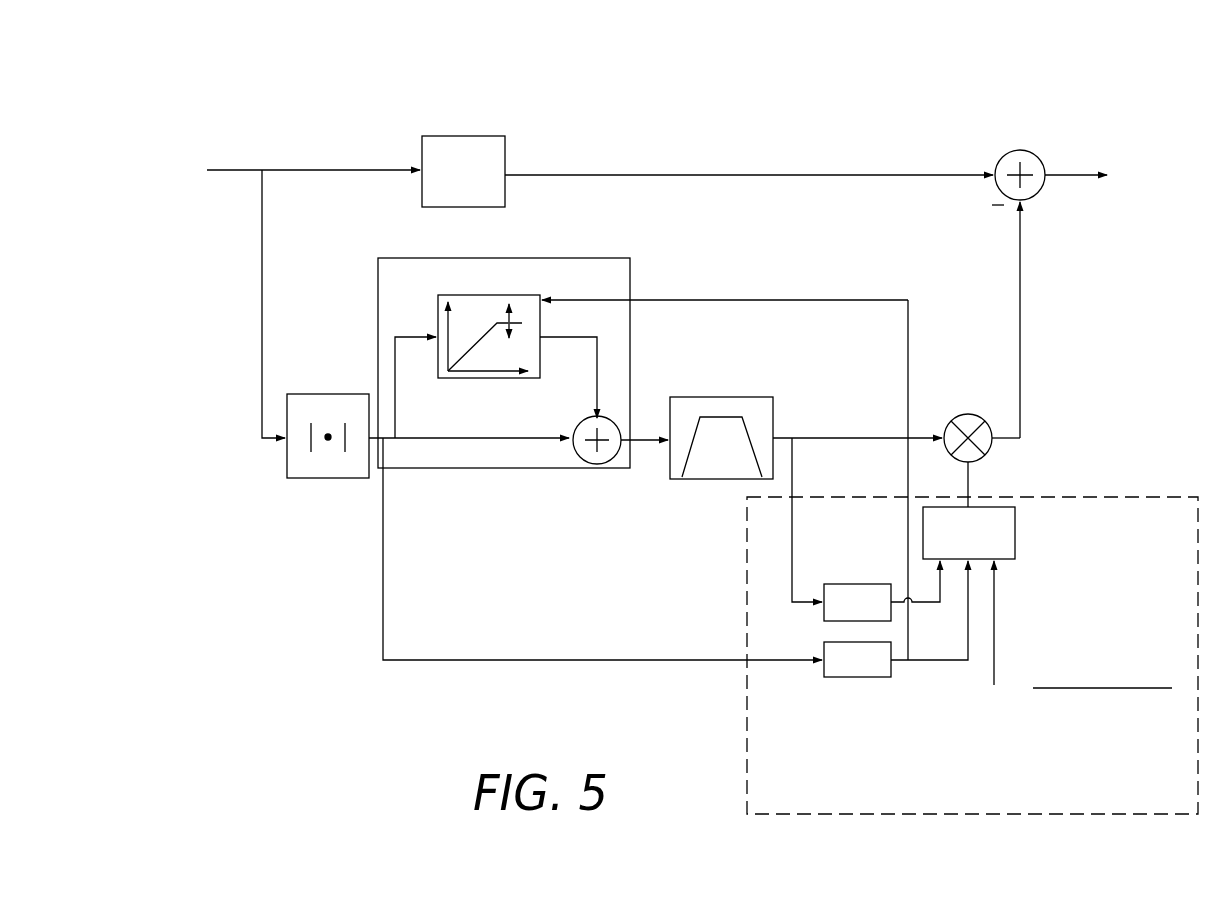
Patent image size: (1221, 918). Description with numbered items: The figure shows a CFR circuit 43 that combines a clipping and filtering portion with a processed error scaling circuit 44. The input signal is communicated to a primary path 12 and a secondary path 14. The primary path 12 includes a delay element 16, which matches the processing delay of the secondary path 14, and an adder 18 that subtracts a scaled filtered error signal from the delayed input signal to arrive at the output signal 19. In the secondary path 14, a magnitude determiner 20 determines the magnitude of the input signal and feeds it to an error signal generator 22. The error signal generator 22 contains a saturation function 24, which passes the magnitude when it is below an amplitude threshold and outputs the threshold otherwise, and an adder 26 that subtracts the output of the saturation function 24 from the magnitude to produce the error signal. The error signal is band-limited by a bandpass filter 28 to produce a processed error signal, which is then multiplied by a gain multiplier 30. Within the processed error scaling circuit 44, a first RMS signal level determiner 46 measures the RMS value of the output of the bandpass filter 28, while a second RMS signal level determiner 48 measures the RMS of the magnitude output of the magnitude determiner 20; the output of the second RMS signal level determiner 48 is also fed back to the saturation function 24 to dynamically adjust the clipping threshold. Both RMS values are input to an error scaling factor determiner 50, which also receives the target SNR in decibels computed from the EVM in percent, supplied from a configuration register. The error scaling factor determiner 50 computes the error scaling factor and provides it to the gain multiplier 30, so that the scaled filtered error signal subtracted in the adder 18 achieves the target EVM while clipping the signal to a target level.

The primary path 12 is at (300, 170).
The secondary path 14 is at (262, 286).
The delay element 16 is at (505, 153).
The adder 18 is at (1012, 154).
The output signal 19 is at (1056, 178).
The magnitude determiner 20 is at (343, 394).
The error signal generator 22 is at (603, 258).
The saturation function 24 is at (487, 378).
The adder 26 is at (576, 427).
The bandpass filter 28 is at (725, 397).
The gain multiplier 30 is at (968, 414).
The CFR circuit 43 is at (697, 73).
The processed error scaling circuit 44 is at (747, 777).
The first RMS signal level determiner 46 is at (835, 584).
The second RMS signal level determiner 48 is at (822, 642).
The error scaling factor determiner 50 is at (1015, 533).